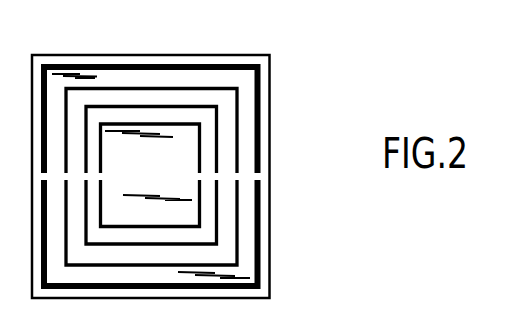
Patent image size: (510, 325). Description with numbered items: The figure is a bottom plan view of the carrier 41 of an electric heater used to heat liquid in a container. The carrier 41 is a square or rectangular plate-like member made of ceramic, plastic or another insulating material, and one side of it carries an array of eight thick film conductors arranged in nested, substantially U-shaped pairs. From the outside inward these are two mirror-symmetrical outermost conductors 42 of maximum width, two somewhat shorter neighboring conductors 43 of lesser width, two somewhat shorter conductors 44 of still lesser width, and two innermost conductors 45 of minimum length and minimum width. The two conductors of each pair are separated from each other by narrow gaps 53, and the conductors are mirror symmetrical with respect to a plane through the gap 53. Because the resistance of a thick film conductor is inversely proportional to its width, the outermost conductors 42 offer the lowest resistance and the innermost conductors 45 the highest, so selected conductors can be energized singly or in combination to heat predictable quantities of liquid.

The carrier 41 is at (274, 126).
The outermost conductors 42 is at (87, 63).
The neighboring conductors 43 is at (129, 88).
The conductors 44 is at (157, 107).
The innermost conductors 45 is at (175, 124).
The gaps 53 is at (258, 177).